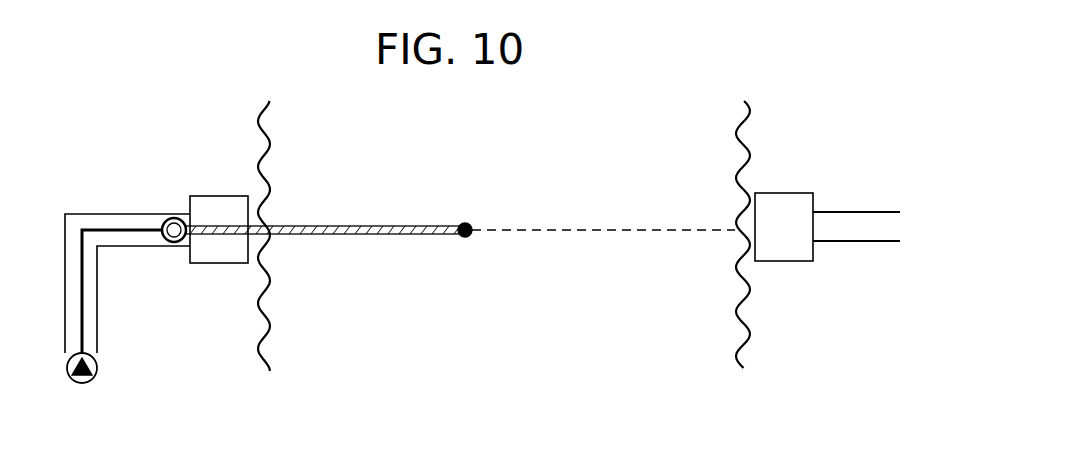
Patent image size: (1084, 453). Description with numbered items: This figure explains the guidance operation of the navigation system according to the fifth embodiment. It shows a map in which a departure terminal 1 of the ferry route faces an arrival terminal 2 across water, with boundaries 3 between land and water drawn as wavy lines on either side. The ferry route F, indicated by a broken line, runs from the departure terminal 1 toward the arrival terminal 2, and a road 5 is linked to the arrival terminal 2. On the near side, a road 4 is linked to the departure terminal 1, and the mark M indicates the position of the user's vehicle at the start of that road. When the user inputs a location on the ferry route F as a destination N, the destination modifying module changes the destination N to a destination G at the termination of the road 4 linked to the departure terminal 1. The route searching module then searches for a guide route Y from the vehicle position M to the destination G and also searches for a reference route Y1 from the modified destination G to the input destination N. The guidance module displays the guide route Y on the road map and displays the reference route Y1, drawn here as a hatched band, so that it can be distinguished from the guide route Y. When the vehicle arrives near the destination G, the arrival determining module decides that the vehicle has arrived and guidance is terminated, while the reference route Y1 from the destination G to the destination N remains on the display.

The departure terminal 1 is at (217, 195).
The arrival terminal 2 is at (780, 192).
The boundaries between land and water 3 is at (257, 112).
The road 4 is at (78, 213).
The road 5 is at (888, 211).
The guide route Y is at (128, 229).
The reference route Y1 is at (360, 224).
The destination G is at (165, 219).
The destination N is at (469, 222).
The ferry route F is at (593, 227).
The mark indicating the position of user's vehicle M is at (97, 367).